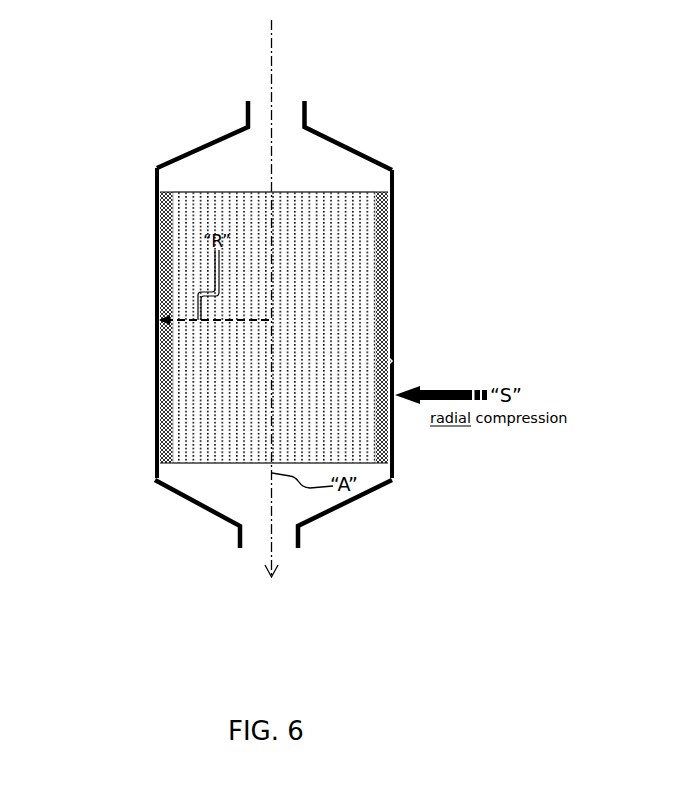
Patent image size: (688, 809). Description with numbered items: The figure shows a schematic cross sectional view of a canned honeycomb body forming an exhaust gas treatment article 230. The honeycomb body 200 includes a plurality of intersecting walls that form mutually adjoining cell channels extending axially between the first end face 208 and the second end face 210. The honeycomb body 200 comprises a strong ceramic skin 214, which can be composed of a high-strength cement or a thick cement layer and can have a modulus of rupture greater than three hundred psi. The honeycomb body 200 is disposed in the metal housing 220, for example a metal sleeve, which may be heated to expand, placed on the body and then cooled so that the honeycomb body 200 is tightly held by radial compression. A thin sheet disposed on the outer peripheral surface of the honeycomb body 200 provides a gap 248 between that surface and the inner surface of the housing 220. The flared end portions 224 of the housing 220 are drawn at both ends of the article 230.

The exhaust gas treatment article 230 is at (150, 35).
The first end face 208 is at (201, 189).
The funnel / tapered guide section 224 is at (372, 148).
The metal housing 220 is at (398, 180).
The strong ceramic skin 214 is at (382, 266).
The honeycomb body 200 is at (347, 329).
The gap 248 is at (391, 361).
The second end face 210 is at (225, 465).